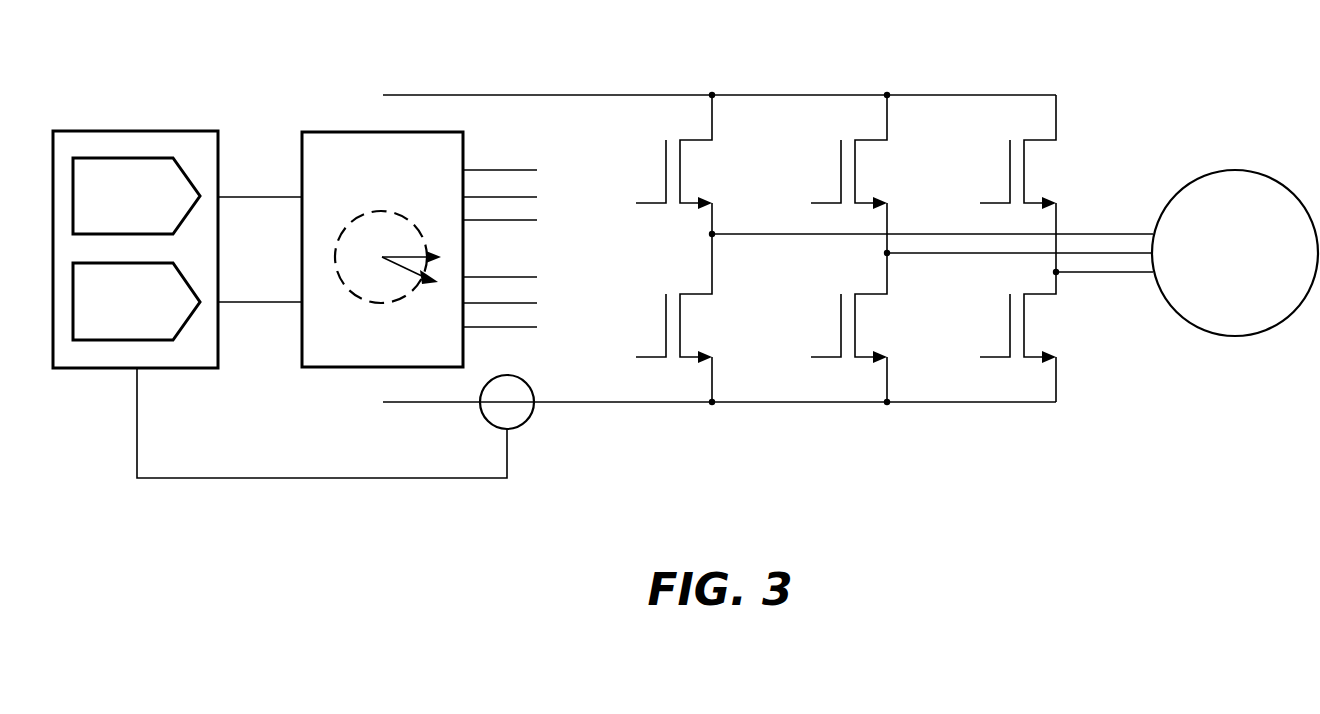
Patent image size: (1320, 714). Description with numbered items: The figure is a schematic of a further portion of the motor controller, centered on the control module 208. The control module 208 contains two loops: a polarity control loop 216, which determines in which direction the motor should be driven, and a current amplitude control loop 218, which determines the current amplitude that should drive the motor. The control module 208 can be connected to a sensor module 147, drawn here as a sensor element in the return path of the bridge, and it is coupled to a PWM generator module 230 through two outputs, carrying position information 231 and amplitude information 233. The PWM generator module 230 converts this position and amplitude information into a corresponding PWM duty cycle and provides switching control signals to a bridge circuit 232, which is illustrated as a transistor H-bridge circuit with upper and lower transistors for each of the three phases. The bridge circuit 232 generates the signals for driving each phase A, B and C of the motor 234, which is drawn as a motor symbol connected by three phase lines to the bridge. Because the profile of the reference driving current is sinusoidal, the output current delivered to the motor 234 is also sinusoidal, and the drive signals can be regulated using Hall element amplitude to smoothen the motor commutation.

The control module 208 is at (138, 131).
The polarity control loop 216 is at (136, 196).
The current amplitude control loop 218 is at (136, 301).
The position information 231 is at (262, 197).
The amplitude information 233 is at (262, 302).
The PWM generator module 230 is at (419, 249).
The bridge circuit 232 is at (768, 231).
The sensor module 147 is at (527, 376).
The motor 234 is at (1235, 253).